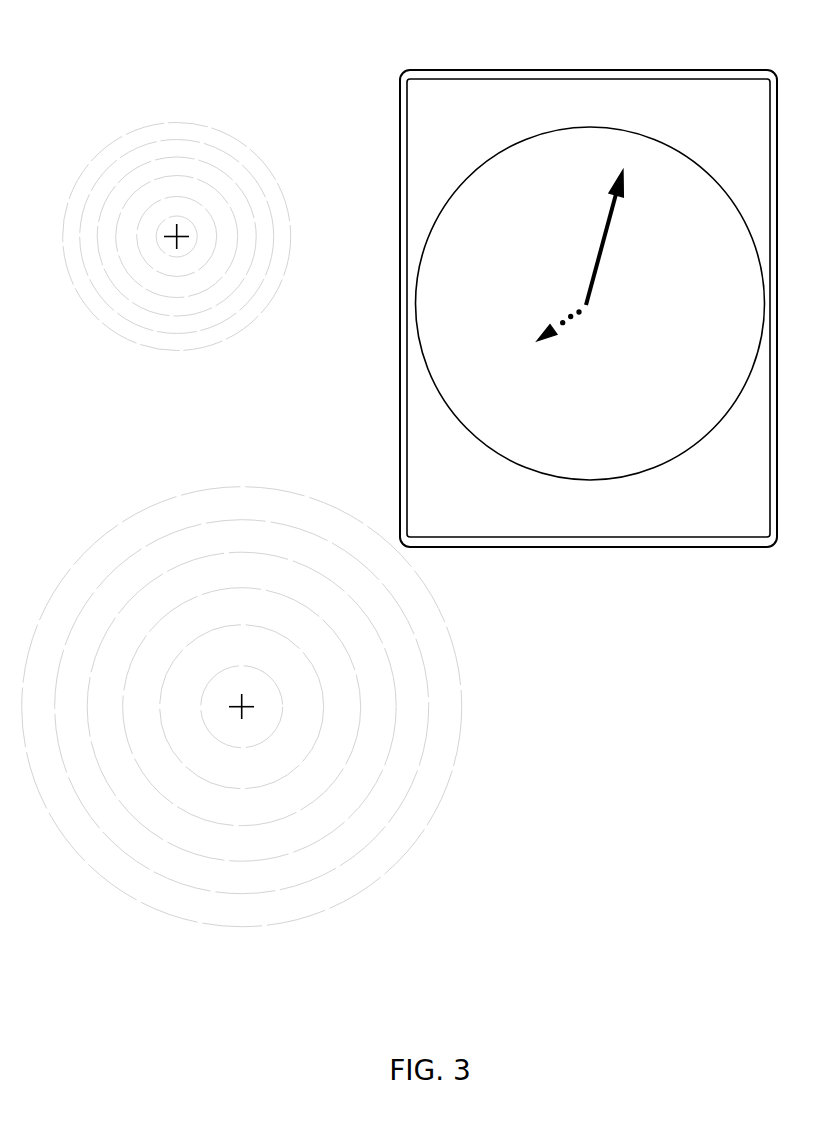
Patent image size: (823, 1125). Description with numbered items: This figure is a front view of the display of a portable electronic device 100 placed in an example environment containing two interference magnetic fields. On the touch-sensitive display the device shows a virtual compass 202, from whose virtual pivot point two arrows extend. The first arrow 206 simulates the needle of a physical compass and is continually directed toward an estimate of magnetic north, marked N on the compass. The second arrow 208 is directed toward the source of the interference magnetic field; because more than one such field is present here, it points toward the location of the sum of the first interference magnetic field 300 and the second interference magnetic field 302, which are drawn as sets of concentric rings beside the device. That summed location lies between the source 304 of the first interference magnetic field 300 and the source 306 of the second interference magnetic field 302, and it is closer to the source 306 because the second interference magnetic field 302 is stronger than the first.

The portable electronic device 100 is at (430, 61).
The virtual compass 202 is at (450, 252).
The first arrow 206 is at (600, 267).
The second arrow 208 is at (567, 480).
The first interference magnetic field 300 is at (179, 358).
The second interference magnetic field 302 is at (245, 939).
The source of the first interference magnetic field 304 is at (180, 240).
The source of the second interference magnetic field 306 is at (245, 710).